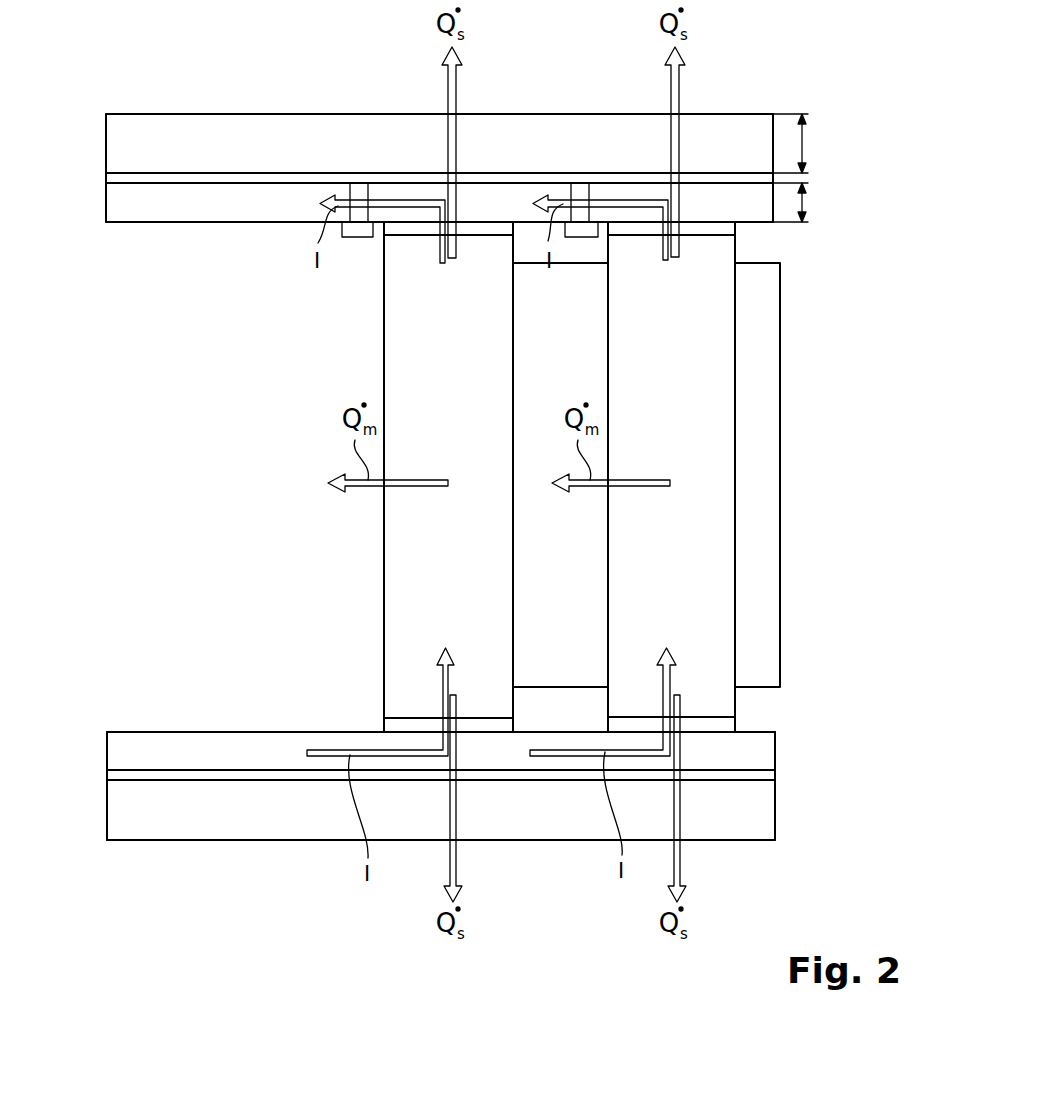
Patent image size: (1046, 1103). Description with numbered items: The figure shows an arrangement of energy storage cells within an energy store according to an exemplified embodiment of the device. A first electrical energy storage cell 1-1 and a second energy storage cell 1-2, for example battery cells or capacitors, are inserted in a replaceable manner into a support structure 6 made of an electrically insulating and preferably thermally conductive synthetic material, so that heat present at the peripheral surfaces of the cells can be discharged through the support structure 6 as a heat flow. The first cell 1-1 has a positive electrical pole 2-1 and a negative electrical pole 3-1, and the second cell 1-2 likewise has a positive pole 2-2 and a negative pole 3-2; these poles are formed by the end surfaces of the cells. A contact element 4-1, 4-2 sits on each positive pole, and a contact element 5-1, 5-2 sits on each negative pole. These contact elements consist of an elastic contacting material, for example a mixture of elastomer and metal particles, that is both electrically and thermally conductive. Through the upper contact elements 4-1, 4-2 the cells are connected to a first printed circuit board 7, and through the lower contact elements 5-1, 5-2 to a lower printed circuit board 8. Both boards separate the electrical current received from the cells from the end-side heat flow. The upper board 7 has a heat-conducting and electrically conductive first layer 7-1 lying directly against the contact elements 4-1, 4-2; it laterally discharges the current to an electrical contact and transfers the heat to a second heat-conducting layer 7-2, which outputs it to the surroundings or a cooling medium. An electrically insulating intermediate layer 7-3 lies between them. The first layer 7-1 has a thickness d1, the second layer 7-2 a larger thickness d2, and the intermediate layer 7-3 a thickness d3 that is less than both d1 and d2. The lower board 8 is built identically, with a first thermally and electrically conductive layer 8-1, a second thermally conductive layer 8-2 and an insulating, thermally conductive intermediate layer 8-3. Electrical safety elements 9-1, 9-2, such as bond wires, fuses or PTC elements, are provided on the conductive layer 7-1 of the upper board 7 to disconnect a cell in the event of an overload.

The first printed circuit board 7 is at (98, 116).
The first layer 7-1 is at (182, 212).
The second heat-conducting layer 7-2 is at (228, 125).
The intermediate layer 7-3 is at (133, 178).
The lower printed circuit board 8 is at (780, 730).
The first thermally and electrically conductive layer 8-1 is at (182, 742).
The second thermally conductive layer 8-2 is at (225, 830).
The intermediate layer 8-3 is at (137, 778).
The first electrical energy storage cell 1-1 is at (393, 530).
The second energy storage cell 1-2 is at (720, 572).
The first or positive electrical pole 2-1 is at (413, 236).
The first positive pole 2-2 is at (642, 236).
The second or negative electrical pole 3-1 is at (405, 717).
The negative electrical pole 3-2 is at (633, 717).
The contact element 4-1 is at (477, 229).
The contact element 4-2 is at (708, 229).
The contact element 5-1 is at (480, 717).
The contact element 5-2 is at (708, 717).
The support structure 6 is at (552, 539).
The electrical safety element 9-1 is at (357, 237).
The electrical safety element 9-2 is at (583, 237).
The thickness of the first electrically and thermally conductive layer d1 is at (806, 208).
The thickness of the second at least thermally conductive layer d2 is at (806, 143).
The thickness of the intermediate layer d3 is at (806, 178).